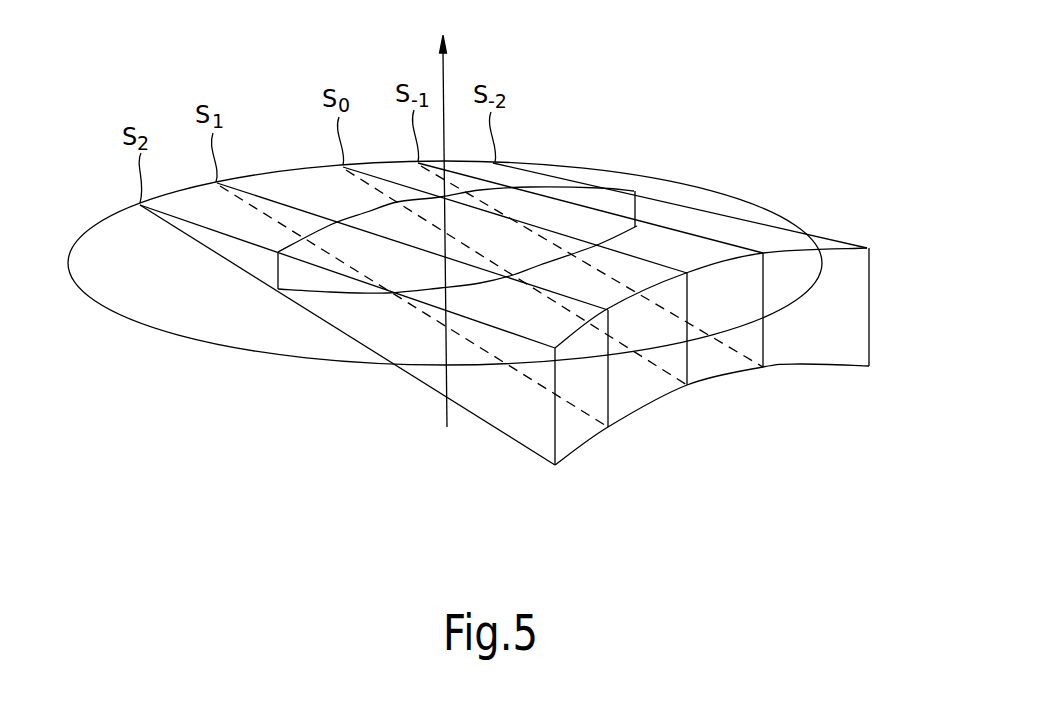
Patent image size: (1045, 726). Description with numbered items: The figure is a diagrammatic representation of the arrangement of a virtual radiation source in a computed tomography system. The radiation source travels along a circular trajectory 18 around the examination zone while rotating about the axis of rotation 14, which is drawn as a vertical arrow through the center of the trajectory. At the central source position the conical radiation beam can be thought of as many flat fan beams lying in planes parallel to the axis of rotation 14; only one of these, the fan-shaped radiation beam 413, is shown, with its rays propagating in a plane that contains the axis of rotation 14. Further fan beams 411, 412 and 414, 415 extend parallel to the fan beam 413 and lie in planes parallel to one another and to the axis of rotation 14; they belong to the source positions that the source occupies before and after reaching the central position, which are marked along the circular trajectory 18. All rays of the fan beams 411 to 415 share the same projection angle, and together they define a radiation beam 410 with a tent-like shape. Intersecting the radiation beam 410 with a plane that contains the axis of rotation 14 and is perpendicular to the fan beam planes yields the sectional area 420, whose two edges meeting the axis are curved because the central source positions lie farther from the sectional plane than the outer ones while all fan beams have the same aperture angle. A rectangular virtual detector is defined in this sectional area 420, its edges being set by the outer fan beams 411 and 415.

The axis of rotation 14 is at (446, 63).
The circular trajectory 18 is at (732, 197).
The radiation beam 410 is at (829, 248).
The fan beam 411 is at (560, 447).
The fan beam 412 is at (611, 408).
The fan-shaped radiation beam 413 is at (690, 372).
The fan beam 414 is at (765, 350).
The fan beam 415 is at (872, 346).
The sectional area 420 is at (560, 185).